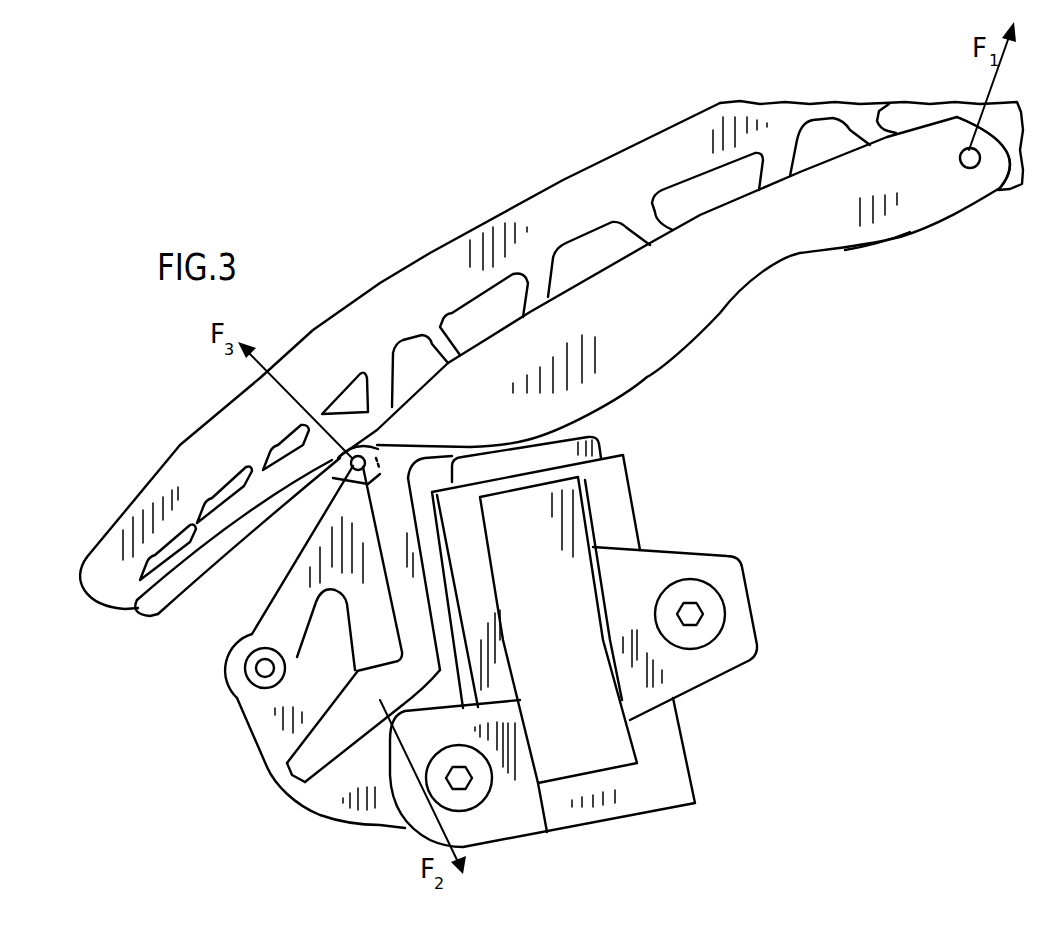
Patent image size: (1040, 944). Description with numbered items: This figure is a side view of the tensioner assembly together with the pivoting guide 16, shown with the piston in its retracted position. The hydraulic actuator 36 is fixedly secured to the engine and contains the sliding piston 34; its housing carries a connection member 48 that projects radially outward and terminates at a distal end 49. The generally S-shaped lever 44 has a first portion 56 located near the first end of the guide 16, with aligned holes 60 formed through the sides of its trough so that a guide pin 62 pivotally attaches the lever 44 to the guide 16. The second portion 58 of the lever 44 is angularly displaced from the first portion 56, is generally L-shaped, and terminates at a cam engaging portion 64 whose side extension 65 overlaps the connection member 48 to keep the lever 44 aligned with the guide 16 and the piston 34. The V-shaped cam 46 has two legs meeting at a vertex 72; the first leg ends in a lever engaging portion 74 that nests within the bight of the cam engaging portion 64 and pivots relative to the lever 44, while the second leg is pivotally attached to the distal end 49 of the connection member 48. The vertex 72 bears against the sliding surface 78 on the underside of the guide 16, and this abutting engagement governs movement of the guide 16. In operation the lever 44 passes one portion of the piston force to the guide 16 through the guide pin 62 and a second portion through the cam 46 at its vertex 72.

The pivoting guide 16 is at (420, 258).
The sliding piston 34 is at (599, 446).
The hydraulic actuator 36 is at (681, 742).
The lever 44 is at (722, 318).
The cam 46 is at (282, 582).
The connection member 48 is at (260, 733).
The distal end 49 is at (237, 698).
The first portion 56 is at (893, 240).
The second portion 58 is at (413, 587).
The aligned holes 60 is at (973, 192).
The guide pin 62 is at (960, 156).
The cam engaging portion 64 is at (325, 778).
The side extension 65 is at (301, 778).
The vertex 72 is at (380, 443).
The lever engaging portion 74 is at (352, 681).
The sliding surface 78 is at (280, 494).